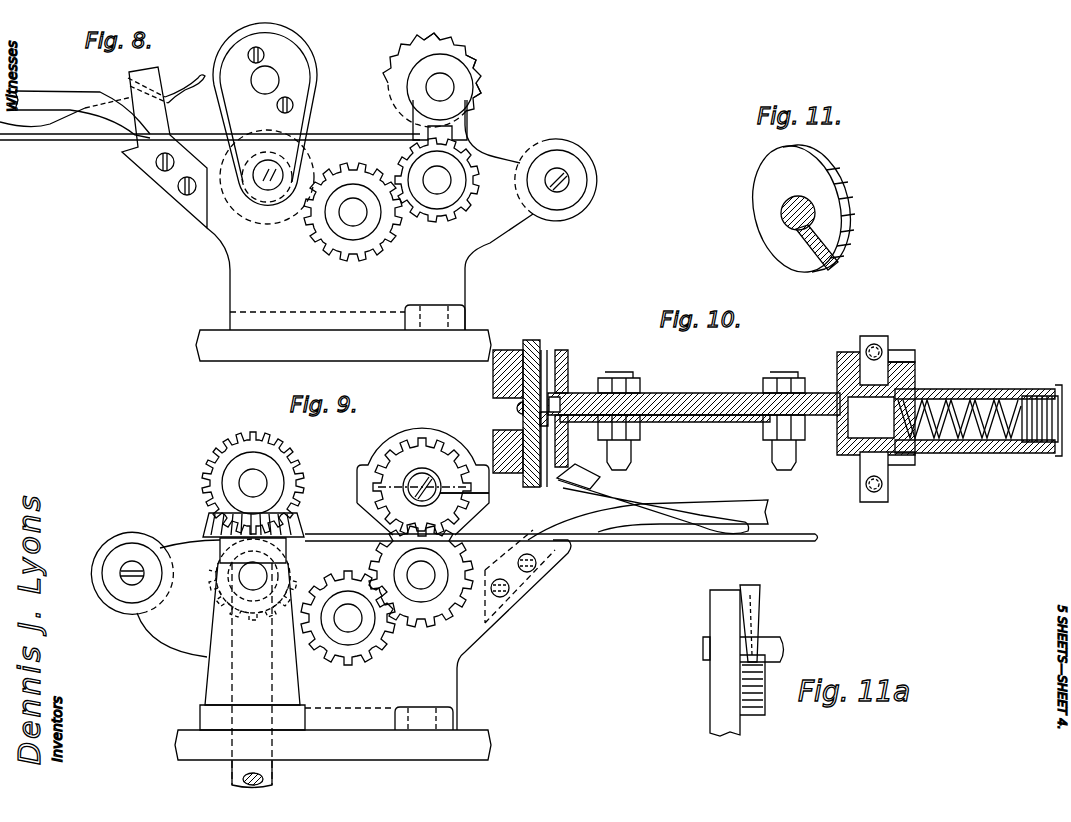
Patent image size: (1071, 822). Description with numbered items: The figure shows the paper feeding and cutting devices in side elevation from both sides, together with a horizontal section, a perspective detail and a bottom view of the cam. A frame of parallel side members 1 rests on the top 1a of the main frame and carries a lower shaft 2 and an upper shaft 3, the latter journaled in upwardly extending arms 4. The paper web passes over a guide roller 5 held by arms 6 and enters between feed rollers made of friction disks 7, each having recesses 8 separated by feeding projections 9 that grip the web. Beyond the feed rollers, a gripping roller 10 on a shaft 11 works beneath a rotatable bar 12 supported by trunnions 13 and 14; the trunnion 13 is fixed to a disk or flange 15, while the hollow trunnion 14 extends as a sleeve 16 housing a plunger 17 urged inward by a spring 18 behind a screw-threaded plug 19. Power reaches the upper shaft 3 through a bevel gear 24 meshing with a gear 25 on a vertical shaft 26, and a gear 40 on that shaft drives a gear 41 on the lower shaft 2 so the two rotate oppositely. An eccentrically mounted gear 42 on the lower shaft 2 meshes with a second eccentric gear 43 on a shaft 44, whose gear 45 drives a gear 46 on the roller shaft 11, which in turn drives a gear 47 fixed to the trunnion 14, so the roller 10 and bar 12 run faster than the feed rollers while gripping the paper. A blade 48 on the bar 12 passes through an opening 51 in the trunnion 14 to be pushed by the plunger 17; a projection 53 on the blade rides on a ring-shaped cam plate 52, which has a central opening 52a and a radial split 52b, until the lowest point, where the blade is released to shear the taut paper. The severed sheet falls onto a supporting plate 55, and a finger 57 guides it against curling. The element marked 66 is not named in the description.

In FIG. 8, the side members 1 is at (218, 238).
In FIG. 9, the side members 1 is at (440, 663).
In FIG. 10, the side members 1 is at (478, 420).
In FIG. 11A, the side members 1 is at (720, 606).
In FIG. 8, the top of the main frame 1a is at (196, 346).
In FIG. 9, the top of the main frame 1a is at (190, 745).
In FIG. 8, the lower shaft 2 is at (437, 180).
In FIG. 9, the lower shaft 2 is at (250, 578).
In FIG. 8, the upper shaft 3 is at (442, 87).
In FIG. 9, the upper shaft 3 is at (250, 483).
In FIG. 8, the upwardly extending arms 4 is at (442, 66).
In FIG. 8, the guide roller 5 is at (580, 207).
In FIG. 9, the guide roller 5 is at (116, 604).
In FIG. 8, the arms 6 is at (575, 185).
In FIG. 9, the arms 6 is at (122, 569).
In FIG. 8, the friction disks 7 is at (472, 92).
In FIG. 8, the recesses 8 is at (455, 46).
In FIG. 8, the feeding projections 9 is at (430, 41).
In FIG. 8, the roller 10 is at (262, 212).
In FIG. 9, the shaft 11 is at (421, 575).
In FIG. 10, the bar 12 is at (706, 393).
In FIG. 8, the trunnion 13 is at (272, 83).
In FIG. 10, the trunnion 13 is at (503, 403).
In FIG. 11A, the trunnion 13 is at (703, 650).
In FIG. 10, the trunnion 14 is at (904, 456).
In FIG. 10, the disk or flange 15 is at (570, 372).
In FIG. 9, the sleeve 16 is at (489, 494).
In FIG. 10, the sleeve 16 is at (990, 390).
In FIG. 10, the plunger 17 is at (871, 417).
In FIG. 10, the spring 18 is at (966, 456).
In FIG. 10, the screw-threaded plug 19 is at (1045, 452).
In FIG. 9, the bevel gear 24 is at (300, 466).
In FIG. 9, the gear 25 is at (205, 527).
In FIG. 9, the shaft 26 is at (262, 777).
In FIG. 8, the gear 40 is at (480, 106).
In FIG. 9, the gear 41 is at (212, 567).
In FIG. 8, the eccentrically mounted gear 42 is at (438, 220).
In FIG. 8, the eccentrically mounted gear 43 is at (357, 258).
In FIG. 8, the shaft 44 is at (353, 210).
In FIG. 9, the shaft 44 is at (348, 616).
In FIG. 9, the gear 45 is at (358, 656).
In FIG. 9, the gear 46 is at (442, 618).
In FIG. 9, the gear 47 is at (418, 457).
In FIG. 10, the blade 48 is at (646, 423).
In FIG. 10, the opening 51 is at (840, 432).
In FIG. 8, the cam plate 52 is at (300, 55).
In FIG. 10, the cam plate 52 is at (535, 350).
In FIG. 11, the cam plate 52 is at (776, 188).
In FIG. 11A, the cam plate 52 is at (756, 615).
In FIG. 10, the central opening 52a is at (503, 402).
In FIG. 11, the central opening 52a is at (815, 212).
In FIG. 10, the radial split 52b is at (520, 430).
In FIG. 11, the radial split 52b is at (838, 266).
In FIG. 10, the projection 53 is at (544, 410).
In FIG. 8, the supporting plate 55 is at (79, 139).
In FIG. 9, the supporting plate 55 is at (672, 542).
In FIG. 8, the finger 57 is at (25, 128).
In FIG. 9, the finger 57 is at (620, 500).
In FIG. 8, the leaf spring 66 is at (60, 104).
In FIG. 9, the leaf spring 66 is at (712, 508).